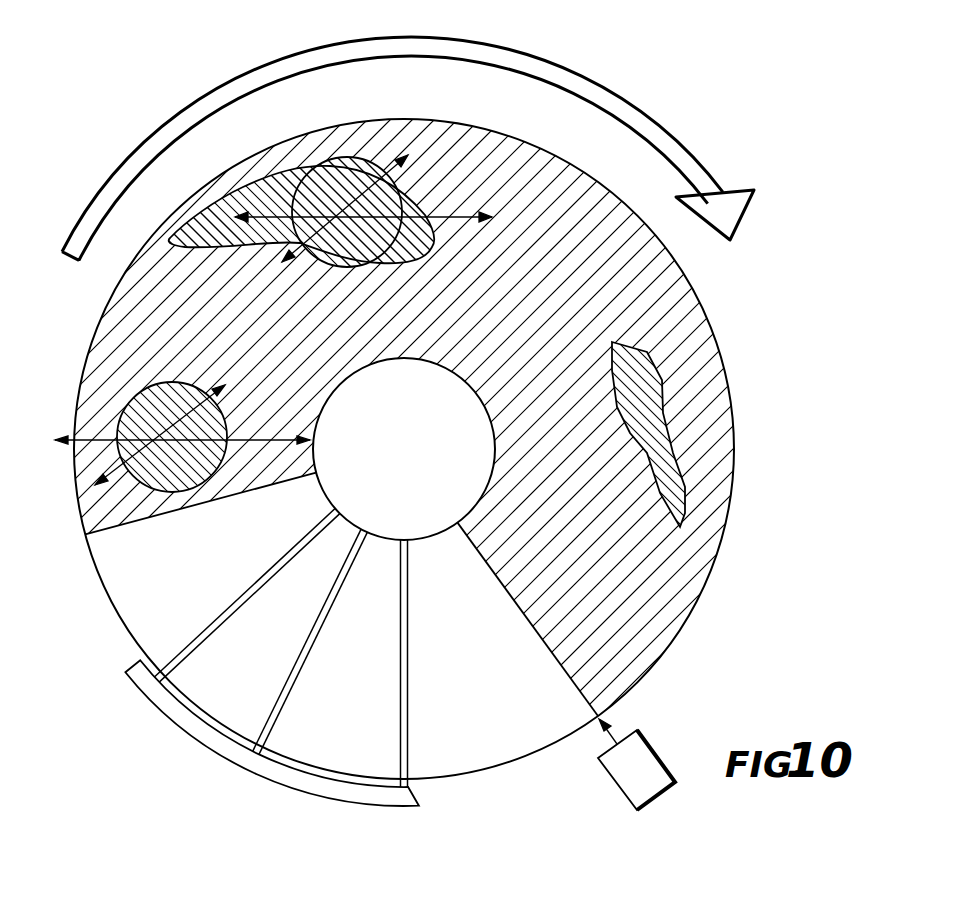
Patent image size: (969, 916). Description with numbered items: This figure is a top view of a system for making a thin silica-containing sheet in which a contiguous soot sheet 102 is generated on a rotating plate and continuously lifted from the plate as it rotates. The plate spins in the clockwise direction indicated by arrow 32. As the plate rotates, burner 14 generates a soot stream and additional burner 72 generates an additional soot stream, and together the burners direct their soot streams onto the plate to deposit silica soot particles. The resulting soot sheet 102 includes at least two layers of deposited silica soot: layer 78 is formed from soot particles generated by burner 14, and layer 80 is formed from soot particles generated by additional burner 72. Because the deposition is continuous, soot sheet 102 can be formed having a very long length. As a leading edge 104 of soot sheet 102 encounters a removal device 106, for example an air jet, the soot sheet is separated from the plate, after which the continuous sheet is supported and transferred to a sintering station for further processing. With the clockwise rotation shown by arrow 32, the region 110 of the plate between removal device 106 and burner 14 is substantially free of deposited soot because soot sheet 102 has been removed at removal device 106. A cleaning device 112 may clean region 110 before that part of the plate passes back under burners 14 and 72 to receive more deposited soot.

The burner 14 is at (138, 405).
The arrow 32 is at (677, 138).
The additional burner 72 is at (330, 172).
The layer 78 is at (667, 588).
The layer 80 is at (653, 418).
The soot sheet 102 is at (707, 352).
The leading edge 104 is at (573, 680).
The removal device 106 is at (618, 773).
The region 110 is at (172, 600).
The cleaning device 112 is at (217, 750).